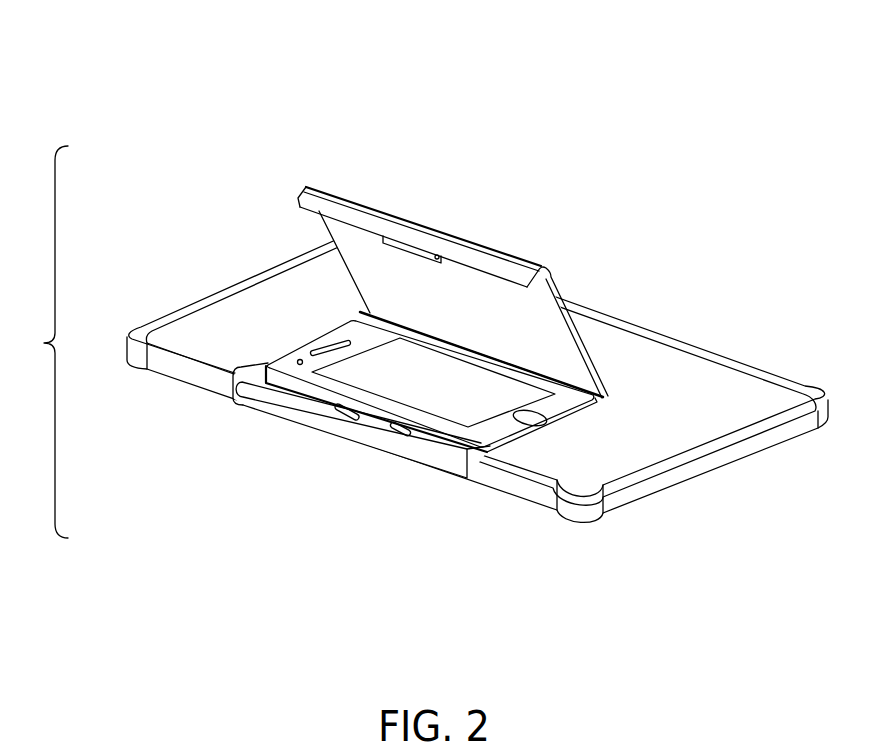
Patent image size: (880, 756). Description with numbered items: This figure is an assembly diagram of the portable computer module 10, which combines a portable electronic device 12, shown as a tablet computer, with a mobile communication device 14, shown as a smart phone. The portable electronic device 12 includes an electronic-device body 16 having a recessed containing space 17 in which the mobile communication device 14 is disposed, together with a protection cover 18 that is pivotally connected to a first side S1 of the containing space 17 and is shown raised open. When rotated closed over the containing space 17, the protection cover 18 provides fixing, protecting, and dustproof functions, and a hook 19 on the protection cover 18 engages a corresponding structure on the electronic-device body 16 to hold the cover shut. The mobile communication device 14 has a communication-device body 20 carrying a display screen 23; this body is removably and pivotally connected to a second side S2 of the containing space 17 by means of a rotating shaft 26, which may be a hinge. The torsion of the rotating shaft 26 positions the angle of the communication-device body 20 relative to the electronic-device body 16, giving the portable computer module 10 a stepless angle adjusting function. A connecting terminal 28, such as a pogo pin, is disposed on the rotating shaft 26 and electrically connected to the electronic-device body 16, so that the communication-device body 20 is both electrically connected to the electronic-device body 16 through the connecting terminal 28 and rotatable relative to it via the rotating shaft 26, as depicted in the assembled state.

The portable computer module 10 is at (681, 83).
The portable electronic device 12 is at (44, 343).
The mobile communication device 14 is at (523, 377).
The electronic-device body 16 is at (205, 323).
The containing space 17 is at (254, 371).
The protection cover 18 is at (302, 199).
The hook 19 is at (428, 257).
The communication-device body 20 is at (505, 430).
The display screen 23 is at (445, 387).
The rotating shaft 26 is at (257, 397).
The connecting terminal 28 is at (352, 418).
The first side S1 is at (401, 330).
The second side S2 is at (290, 422).